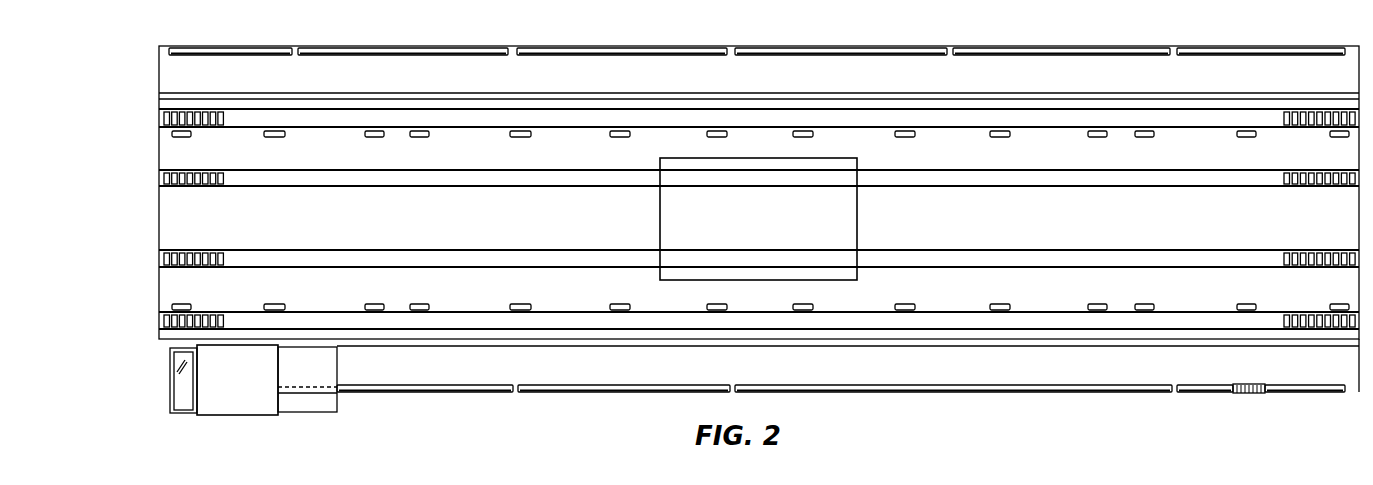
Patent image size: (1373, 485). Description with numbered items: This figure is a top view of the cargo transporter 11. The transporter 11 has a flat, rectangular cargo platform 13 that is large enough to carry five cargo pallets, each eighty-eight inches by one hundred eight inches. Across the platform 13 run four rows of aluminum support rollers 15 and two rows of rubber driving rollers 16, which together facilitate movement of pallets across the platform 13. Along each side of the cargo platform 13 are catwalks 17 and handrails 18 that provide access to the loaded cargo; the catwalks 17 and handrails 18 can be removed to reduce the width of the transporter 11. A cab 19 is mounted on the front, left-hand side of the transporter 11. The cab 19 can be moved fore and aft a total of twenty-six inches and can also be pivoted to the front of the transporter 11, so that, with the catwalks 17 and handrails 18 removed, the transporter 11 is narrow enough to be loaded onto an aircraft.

The cargo transporter 11 is at (422, 32).
The cargo platform 13 is at (577, 297).
The aluminum support rollers 15 is at (205, 118).
The rubber driving rollers 16 is at (278, 130).
The catwalks 17 is at (578, 73).
The handrails 18 is at (805, 53).
The cab 19 is at (239, 400).